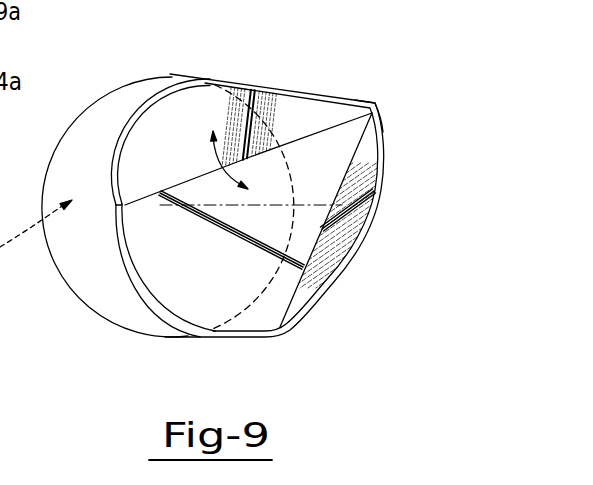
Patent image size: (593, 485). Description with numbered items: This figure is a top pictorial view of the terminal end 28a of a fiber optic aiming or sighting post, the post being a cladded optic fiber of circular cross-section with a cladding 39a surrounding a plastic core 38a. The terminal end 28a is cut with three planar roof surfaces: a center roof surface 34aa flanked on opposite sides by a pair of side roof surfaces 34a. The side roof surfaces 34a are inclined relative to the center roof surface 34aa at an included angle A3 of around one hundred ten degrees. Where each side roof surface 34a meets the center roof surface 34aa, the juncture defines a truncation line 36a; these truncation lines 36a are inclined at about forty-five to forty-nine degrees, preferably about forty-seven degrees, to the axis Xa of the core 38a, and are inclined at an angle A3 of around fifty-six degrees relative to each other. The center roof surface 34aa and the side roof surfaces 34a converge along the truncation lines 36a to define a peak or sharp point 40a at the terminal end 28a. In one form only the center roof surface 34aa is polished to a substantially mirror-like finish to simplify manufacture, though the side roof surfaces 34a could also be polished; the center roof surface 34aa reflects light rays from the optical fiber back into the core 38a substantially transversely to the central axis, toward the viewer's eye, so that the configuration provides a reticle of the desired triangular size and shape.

The terminal end 28a is at (390, 191).
The side roof surfaces 34a is at (272, 97).
The center roof surface 34aa is at (147, 263).
The truncation line 36a is at (250, 162).
The core 38a is at (125, 320).
The cladding 39a is at (143, 113).
The peak or sharp point 40a is at (378, 100).
The axis Xa is at (215, 208).
The included angle A3 is at (215, 156).